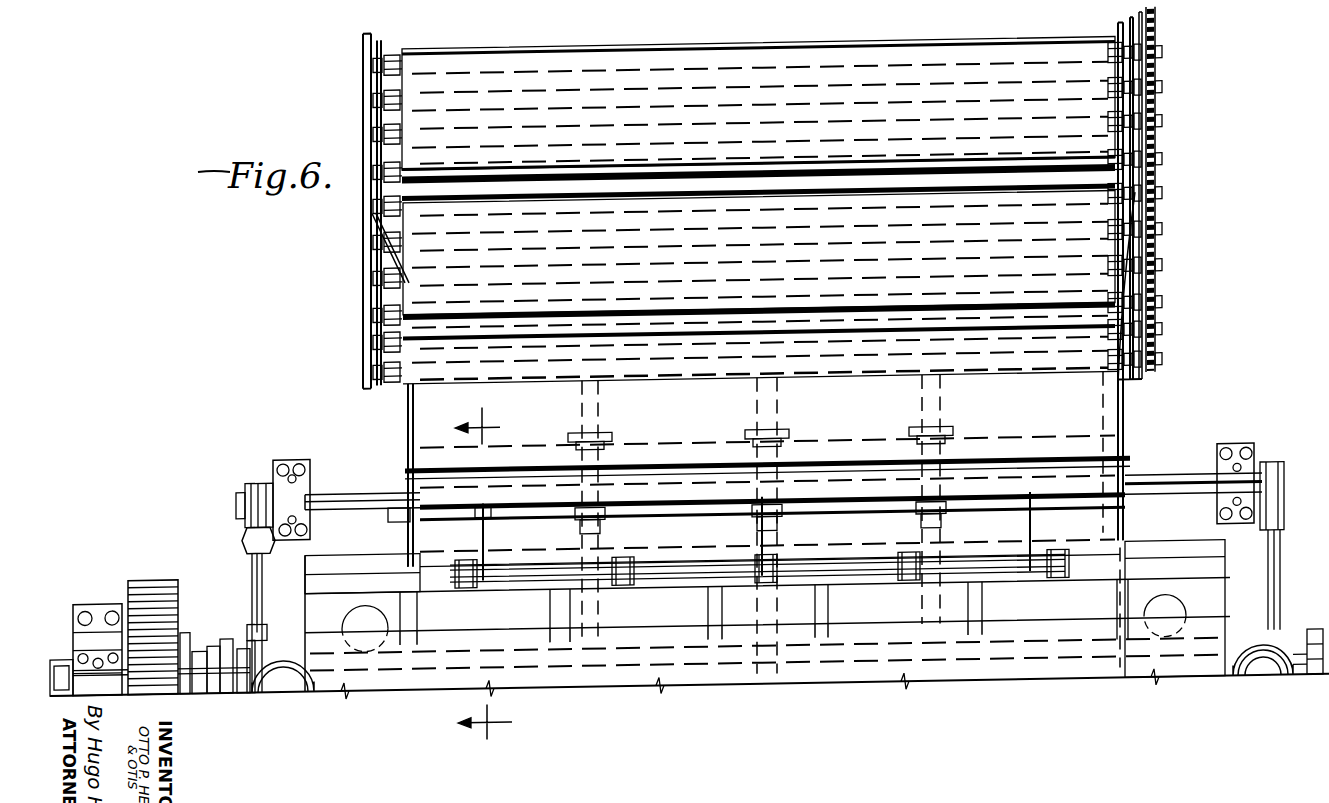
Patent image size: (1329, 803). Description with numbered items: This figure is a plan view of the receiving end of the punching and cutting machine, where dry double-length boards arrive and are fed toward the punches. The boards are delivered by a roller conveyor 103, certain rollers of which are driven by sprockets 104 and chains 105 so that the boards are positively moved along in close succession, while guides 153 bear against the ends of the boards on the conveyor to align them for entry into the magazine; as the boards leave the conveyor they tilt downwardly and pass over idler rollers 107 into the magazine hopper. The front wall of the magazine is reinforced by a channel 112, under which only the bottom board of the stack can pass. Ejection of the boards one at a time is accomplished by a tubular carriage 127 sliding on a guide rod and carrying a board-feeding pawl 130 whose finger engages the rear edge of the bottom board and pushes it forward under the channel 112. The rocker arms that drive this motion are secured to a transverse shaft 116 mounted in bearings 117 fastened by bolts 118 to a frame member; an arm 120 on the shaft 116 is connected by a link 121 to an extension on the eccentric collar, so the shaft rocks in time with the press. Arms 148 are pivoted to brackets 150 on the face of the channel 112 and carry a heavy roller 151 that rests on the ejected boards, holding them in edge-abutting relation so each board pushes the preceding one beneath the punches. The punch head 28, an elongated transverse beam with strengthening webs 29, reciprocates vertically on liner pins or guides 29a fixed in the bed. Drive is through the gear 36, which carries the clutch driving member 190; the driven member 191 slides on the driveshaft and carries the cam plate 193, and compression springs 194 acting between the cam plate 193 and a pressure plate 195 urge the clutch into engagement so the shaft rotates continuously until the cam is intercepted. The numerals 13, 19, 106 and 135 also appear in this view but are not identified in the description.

The roller conveyor 103 is at (363, 110).
The sprockets 104 is at (1152, 103).
The chains 105 is at (1156, 150).
The bearing 106 is at (1158, 316).
The idler rollers 107 is at (1132, 352).
The guides 153 is at (378, 304).
The housing 19 is at (440, 436).
The section line 13 is at (498, 573).
The board-feeding pawl 130 is at (745, 446).
The tubular carriage 127 is at (792, 460).
The transverse shaft 116 is at (340, 493).
The bearings 117 is at (289, 470).
The bolts 118 is at (276, 466).
The arm 120 is at (242, 523).
The link 121 is at (252, 576).
The liner pins or guides 29a is at (308, 598).
The channel 112 is at (395, 519).
The arms 148 is at (482, 544).
The brackets 150 is at (495, 532).
The heavy roller 151 is at (455, 580).
The strengthening webs 29 is at (460, 655).
The punch head 28 is at (393, 630).
The gear 36 is at (147, 577).
The driving member 190 is at (185, 635).
The driven member 191 is at (199, 648).
The shaft 135 is at (213, 645).
The cam plate 193 is at (228, 638).
The compression springs 194 is at (243, 648).
The pressure plate 195 is at (255, 628).